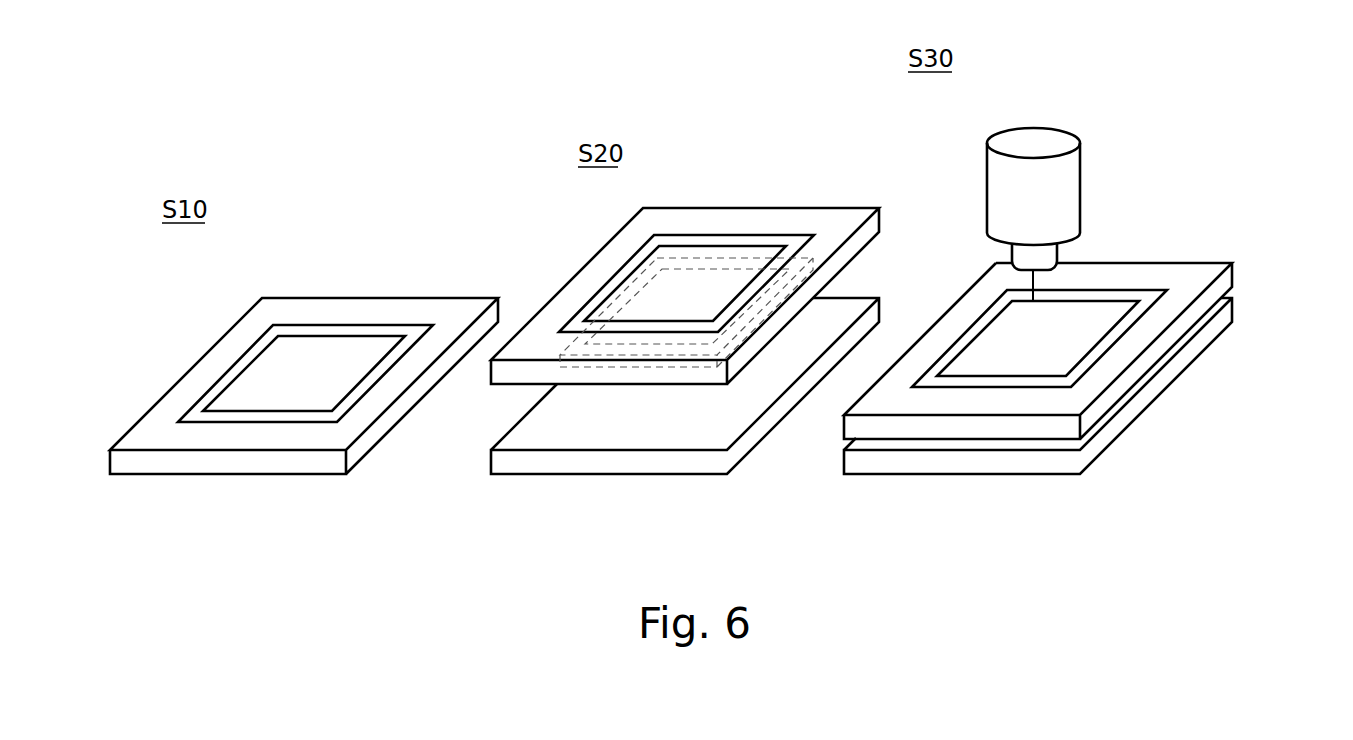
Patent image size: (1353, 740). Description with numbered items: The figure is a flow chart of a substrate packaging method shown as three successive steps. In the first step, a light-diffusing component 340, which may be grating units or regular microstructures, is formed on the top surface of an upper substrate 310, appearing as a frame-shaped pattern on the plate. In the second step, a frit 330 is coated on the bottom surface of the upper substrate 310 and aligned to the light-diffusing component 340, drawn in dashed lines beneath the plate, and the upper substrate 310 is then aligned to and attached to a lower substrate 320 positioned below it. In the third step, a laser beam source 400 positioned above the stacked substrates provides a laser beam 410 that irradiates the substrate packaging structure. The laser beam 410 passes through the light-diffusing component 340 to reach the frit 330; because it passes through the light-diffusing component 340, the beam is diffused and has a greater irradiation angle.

The upper substrate 310 is at (440, 305).
The lower substrate 320 is at (1213, 327).
The frit 330 is at (643, 368).
The light-diffusing component 340 is at (335, 332).
The laser beam source 400 is at (1070, 188).
The laser beam 410 is at (1033, 283).